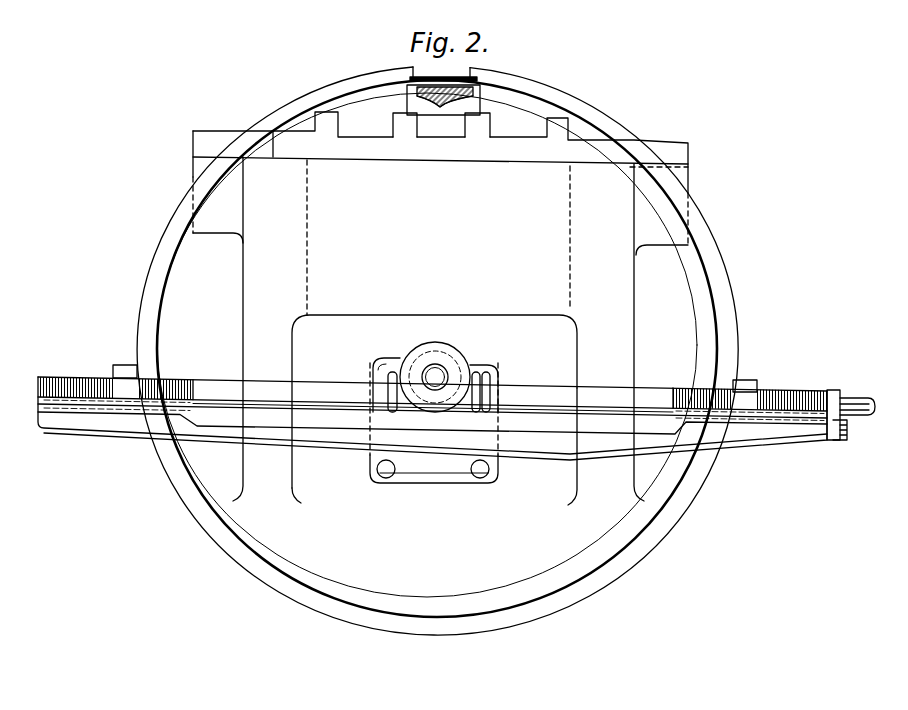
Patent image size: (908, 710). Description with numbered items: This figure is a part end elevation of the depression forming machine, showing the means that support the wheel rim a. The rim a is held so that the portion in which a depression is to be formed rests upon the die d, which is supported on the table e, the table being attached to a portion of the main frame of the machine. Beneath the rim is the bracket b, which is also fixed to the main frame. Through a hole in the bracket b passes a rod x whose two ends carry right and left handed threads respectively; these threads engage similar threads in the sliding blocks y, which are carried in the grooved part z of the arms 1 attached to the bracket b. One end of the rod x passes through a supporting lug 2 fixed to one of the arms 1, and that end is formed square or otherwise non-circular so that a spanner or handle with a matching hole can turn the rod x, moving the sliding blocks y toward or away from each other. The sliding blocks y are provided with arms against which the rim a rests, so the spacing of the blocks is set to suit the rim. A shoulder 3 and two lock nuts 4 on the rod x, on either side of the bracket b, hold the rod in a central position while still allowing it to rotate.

The wheel rim a is at (692, 213).
The bracket b is at (423, 483).
The die d is at (425, 129).
The table e is at (503, 156).
The rod x is at (432, 383).
The sliding blocks y is at (121, 365).
The grooved part z is at (118, 430).
The arms 1 is at (375, 460).
The supporting lug 2 is at (851, 404).
The shoulder 3 is at (387, 376).
The lock nuts 4 is at (484, 373).